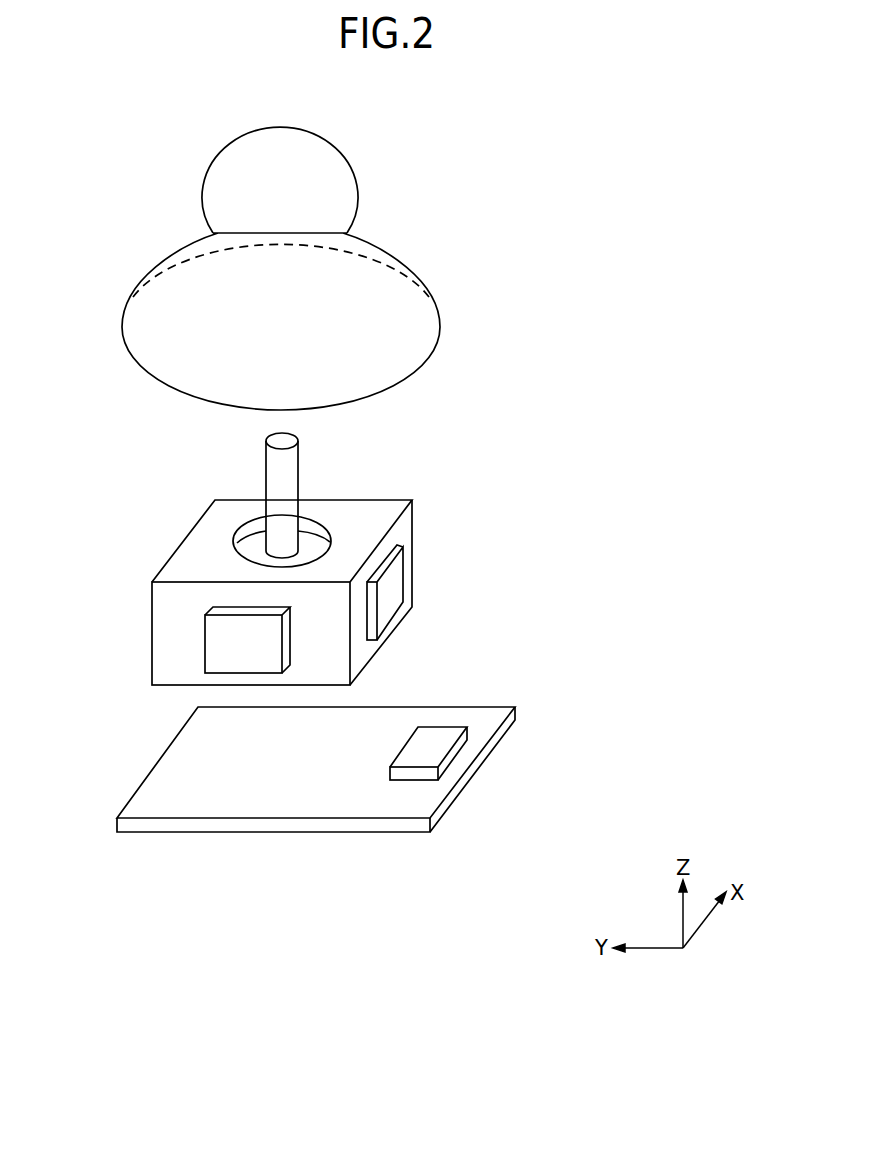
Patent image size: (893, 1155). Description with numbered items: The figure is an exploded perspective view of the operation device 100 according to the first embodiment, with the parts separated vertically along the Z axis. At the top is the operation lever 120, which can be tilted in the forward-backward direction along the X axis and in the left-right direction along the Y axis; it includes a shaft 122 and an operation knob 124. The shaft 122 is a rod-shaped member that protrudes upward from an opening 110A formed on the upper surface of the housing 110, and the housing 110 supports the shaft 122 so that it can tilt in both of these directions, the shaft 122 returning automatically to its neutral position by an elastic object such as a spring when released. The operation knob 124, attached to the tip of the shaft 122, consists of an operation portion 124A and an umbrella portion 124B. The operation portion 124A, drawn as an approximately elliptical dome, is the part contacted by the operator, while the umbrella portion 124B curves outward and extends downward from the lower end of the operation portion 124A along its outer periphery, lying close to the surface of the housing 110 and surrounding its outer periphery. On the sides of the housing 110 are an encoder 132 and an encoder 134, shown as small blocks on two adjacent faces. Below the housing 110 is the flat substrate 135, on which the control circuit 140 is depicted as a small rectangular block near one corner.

The operation device 100 is at (674, 287).
The housing 110 is at (231, 570).
The opening 110A is at (241, 529).
The operation lever 120 is at (363, 342).
The shaft 122 is at (298, 482).
The operation knob 124 is at (363, 268).
The operation portion 124A is at (355, 167).
The umbrella portion 124B is at (390, 257).
The encoder 132 is at (400, 580).
The encoder 134 is at (220, 647).
The substrate 135 is at (393, 823).
The control circuit 140 is at (453, 752).